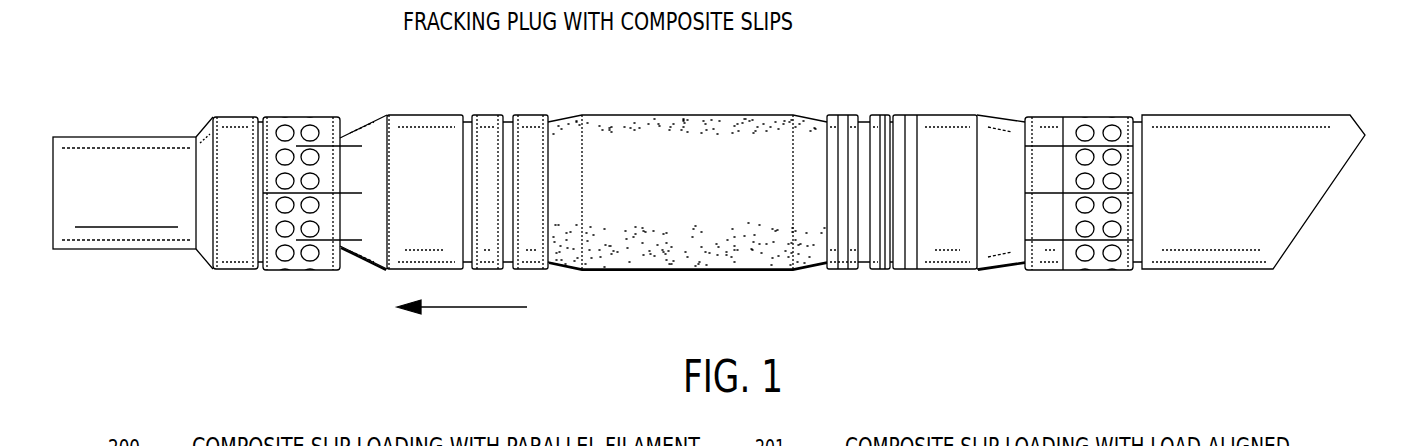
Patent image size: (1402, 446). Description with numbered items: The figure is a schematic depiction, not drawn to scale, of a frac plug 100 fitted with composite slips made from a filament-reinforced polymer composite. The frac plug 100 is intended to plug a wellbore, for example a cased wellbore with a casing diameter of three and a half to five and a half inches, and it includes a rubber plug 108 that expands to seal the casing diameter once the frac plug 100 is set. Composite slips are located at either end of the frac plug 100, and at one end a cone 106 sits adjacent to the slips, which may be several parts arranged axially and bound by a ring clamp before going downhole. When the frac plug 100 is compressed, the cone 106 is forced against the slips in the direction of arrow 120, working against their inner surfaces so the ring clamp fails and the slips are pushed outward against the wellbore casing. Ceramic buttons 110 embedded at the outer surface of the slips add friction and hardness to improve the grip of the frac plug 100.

The frac plug 100 is at (192, 36).
The cone 106 is at (385, 115).
The rubber plug 108 is at (695, 114).
The ceramic buttons 110 is at (315, 119).
The arrow 120 is at (450, 309).